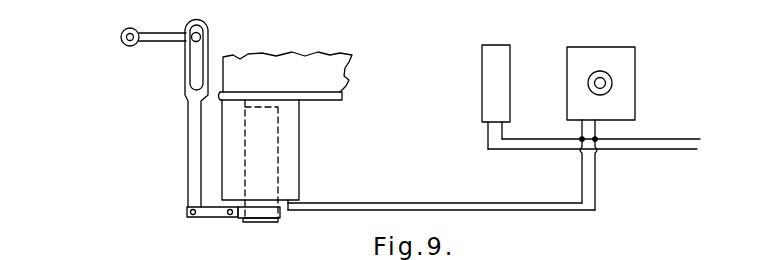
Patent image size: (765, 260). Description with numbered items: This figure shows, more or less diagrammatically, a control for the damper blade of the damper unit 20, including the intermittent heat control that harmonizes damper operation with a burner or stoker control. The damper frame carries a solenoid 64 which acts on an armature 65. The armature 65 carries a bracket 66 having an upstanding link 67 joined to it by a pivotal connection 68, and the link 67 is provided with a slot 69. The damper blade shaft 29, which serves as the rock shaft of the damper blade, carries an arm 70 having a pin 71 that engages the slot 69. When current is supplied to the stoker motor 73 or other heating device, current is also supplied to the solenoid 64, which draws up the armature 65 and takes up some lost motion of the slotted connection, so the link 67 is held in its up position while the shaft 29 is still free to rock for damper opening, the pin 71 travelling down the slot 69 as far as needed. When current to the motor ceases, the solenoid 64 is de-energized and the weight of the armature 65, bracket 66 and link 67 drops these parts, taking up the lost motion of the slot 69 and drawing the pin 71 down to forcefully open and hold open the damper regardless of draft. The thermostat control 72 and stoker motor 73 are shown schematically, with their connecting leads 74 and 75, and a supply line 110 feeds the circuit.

The damper unit 20 is at (349, 78).
The damper blade shaft 29 is at (121, 37).
The solenoid 64 is at (295, 150).
The armature 65 is at (279, 127).
The bracket 66 is at (226, 214).
The link 67 is at (195, 158).
The pivotal connection 68 is at (187, 211).
The slot 69 is at (196, 75).
The arm 70 is at (161, 36).
The pin 71 is at (204, 37).
The thermostat control 72 is at (482, 97).
The stoker motor 73 is at (636, 82).
The connecting lead 74 is at (449, 203).
The connecting lead 75 is at (517, 211).
The line 110 is at (726, 134).